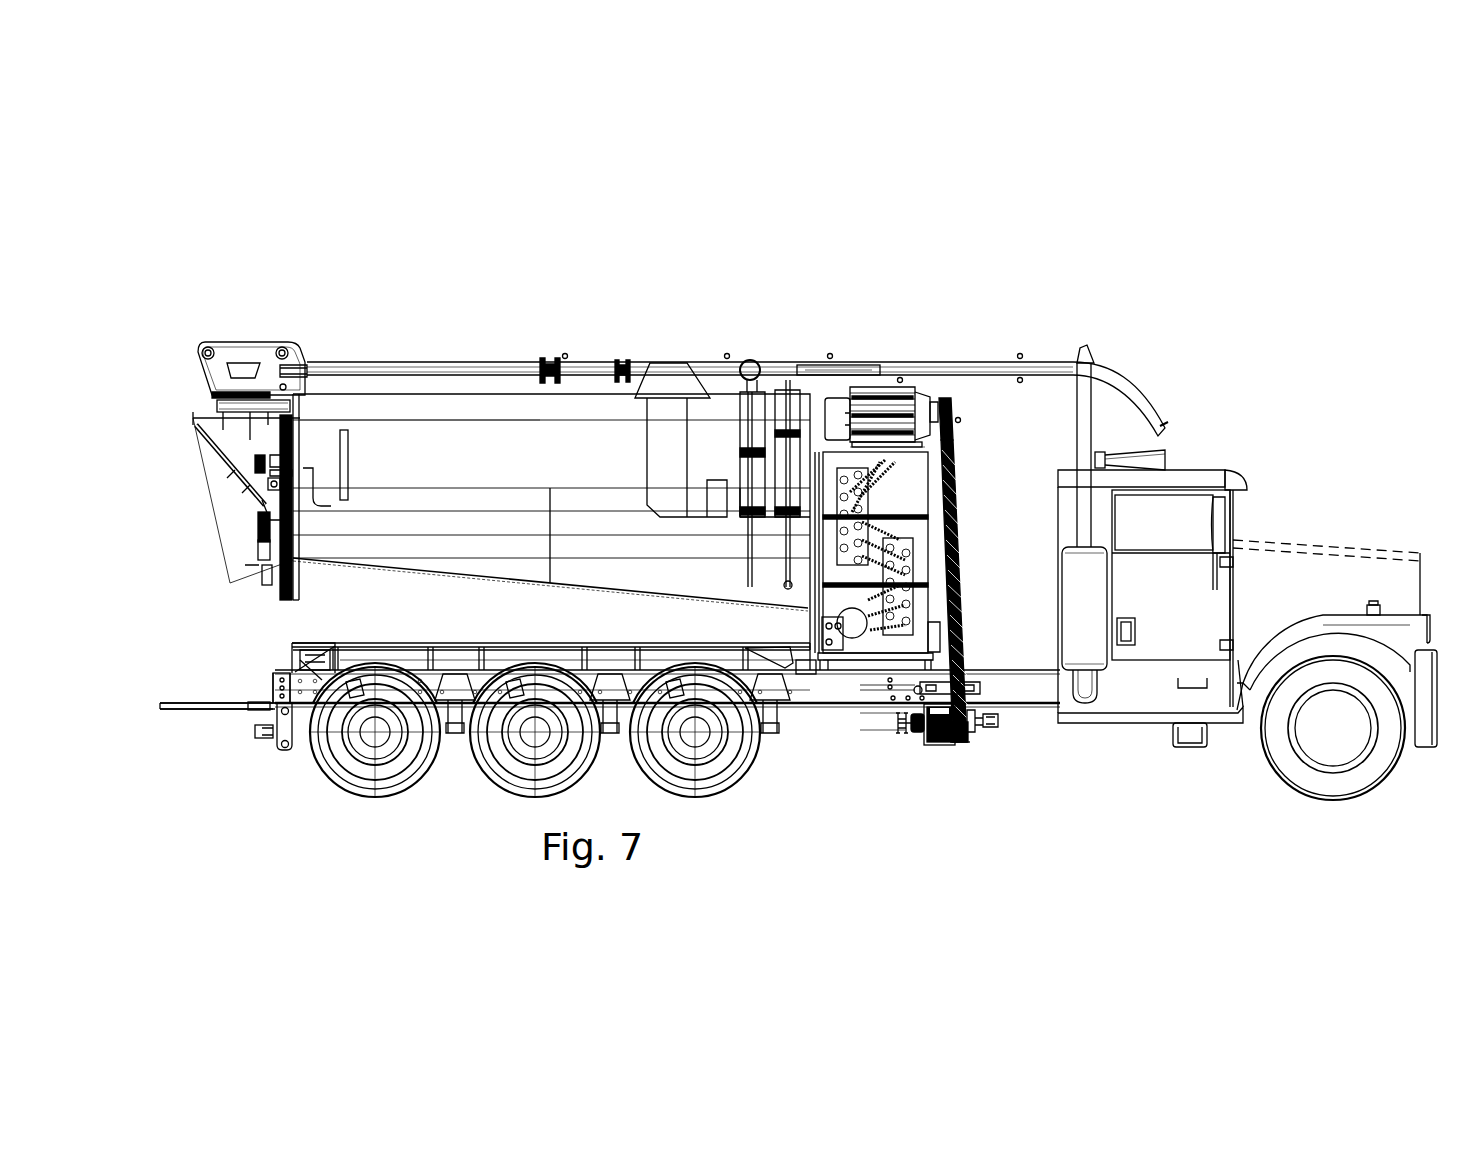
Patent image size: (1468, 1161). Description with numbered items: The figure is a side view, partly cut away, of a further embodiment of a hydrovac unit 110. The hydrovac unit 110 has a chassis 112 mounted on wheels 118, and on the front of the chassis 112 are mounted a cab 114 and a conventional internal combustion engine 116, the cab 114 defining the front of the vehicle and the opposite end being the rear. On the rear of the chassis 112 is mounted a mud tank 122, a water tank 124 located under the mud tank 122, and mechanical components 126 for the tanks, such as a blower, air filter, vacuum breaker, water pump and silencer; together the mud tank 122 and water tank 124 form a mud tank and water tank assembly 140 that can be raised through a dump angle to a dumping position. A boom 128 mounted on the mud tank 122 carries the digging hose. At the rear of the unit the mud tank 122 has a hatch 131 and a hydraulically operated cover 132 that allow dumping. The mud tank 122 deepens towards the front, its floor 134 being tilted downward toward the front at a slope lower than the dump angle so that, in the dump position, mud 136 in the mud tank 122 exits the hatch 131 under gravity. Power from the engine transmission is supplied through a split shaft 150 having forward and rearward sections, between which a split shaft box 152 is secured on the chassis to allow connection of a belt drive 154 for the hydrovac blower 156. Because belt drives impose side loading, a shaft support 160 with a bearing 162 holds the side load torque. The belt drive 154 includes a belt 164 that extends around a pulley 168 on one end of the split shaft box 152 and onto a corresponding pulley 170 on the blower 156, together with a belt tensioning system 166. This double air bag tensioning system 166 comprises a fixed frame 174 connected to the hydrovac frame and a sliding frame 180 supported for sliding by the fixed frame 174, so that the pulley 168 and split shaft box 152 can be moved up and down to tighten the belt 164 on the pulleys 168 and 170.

The hydrovac unit 110 is at (330, 208).
The chassis 112 is at (380, 643).
The cab 114 is at (1224, 394).
The internal combustion engine 116 is at (1374, 514).
The wheels 118 is at (295, 768).
The mud tank 122 is at (540, 432).
The water tank 124 is at (462, 519).
The mechanical components 126 is at (232, 511).
The boom 128 is at (433, 362).
The hatch 131 is at (266, 485).
The hydraulically operated cover 132 is at (255, 422).
The floor 134 is at (596, 585).
The mud 136 is at (390, 587).
The mud tank and water tank assembly 140 is at (573, 382).
The shaft 150 is at (990, 733).
The split shaft box 152 is at (946, 748).
The belt drive 154 is at (977, 640).
The hydrovac blower 156 is at (915, 387).
The shaft support 160 is at (911, 737).
The bearing 162 is at (902, 738).
The belt 164 is at (955, 478).
The belt tensioning system 166 is at (943, 600).
The pulley 168 is at (990, 745).
The pulley 170 is at (952, 398).
The fixed frame 174 is at (917, 691).
The sliding frame 180 is at (978, 693).